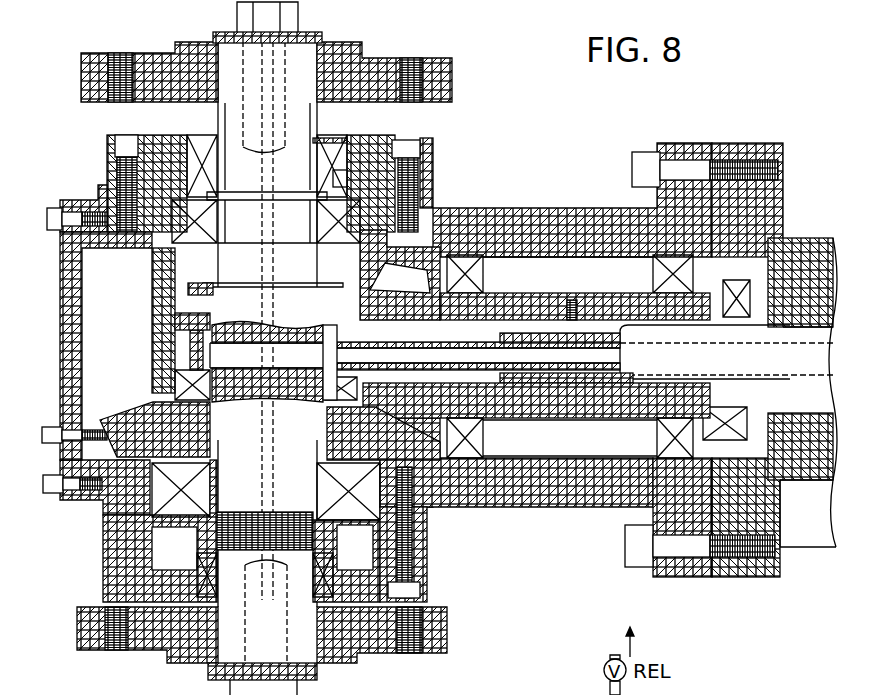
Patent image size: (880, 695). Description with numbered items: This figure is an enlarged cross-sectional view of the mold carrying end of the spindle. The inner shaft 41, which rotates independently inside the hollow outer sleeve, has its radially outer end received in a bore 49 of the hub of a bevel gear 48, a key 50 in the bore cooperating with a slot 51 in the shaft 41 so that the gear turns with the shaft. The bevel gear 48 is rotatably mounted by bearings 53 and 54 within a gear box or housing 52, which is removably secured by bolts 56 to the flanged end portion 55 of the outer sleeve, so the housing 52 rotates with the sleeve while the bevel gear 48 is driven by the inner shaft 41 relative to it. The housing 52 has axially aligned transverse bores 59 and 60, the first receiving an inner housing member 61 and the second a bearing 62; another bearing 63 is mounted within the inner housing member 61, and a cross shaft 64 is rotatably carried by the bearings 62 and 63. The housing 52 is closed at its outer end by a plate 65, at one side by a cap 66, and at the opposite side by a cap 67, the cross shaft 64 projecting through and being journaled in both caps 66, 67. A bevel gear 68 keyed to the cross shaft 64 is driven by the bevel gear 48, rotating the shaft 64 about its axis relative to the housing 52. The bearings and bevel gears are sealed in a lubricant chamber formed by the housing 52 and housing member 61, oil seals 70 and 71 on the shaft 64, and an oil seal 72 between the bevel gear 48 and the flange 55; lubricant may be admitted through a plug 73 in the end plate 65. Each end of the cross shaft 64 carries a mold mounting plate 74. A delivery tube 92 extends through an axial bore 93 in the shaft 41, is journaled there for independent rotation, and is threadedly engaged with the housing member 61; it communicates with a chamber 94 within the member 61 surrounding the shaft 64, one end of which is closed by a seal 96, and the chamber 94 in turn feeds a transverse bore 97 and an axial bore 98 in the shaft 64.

The inner shaft 41 is at (775, 330).
The bevel gear 48 is at (483, 272).
The bore 49 is at (457, 387).
The key 50 is at (593, 320).
The slot 51 is at (578, 308).
The gear box or housing 52 is at (97, 186).
The bearing 53 is at (483, 438).
The bearing 54 is at (657, 440).
The flanged end portion 55 is at (740, 578).
The bolts 56 is at (632, 163).
The transverse bore 59 is at (110, 227).
The transverse bore 60 is at (367, 490).
The inner housing member 61 is at (152, 308).
The bearing 62 is at (350, 513).
The bearing 63 is at (347, 207).
The cross shaft 64 is at (210, 282).
The plate 65 is at (60, 317).
The cap 66 is at (160, 136).
The cap 67 is at (427, 565).
The bevel gear 68 is at (127, 420).
The oil seal 70 is at (197, 560).
The oil seal 71 is at (200, 187).
The oil seal 72 is at (716, 290).
The plug 73 is at (58, 428).
The mold mounting plate 74 is at (147, 53).
The delivery tube 92 is at (418, 342).
The axial bore 93 is at (547, 373).
The chamber 94 is at (200, 347).
The seal 96 is at (173, 382).
The transverse bore 97 is at (297, 360).
The axial bore 98 is at (262, 327).